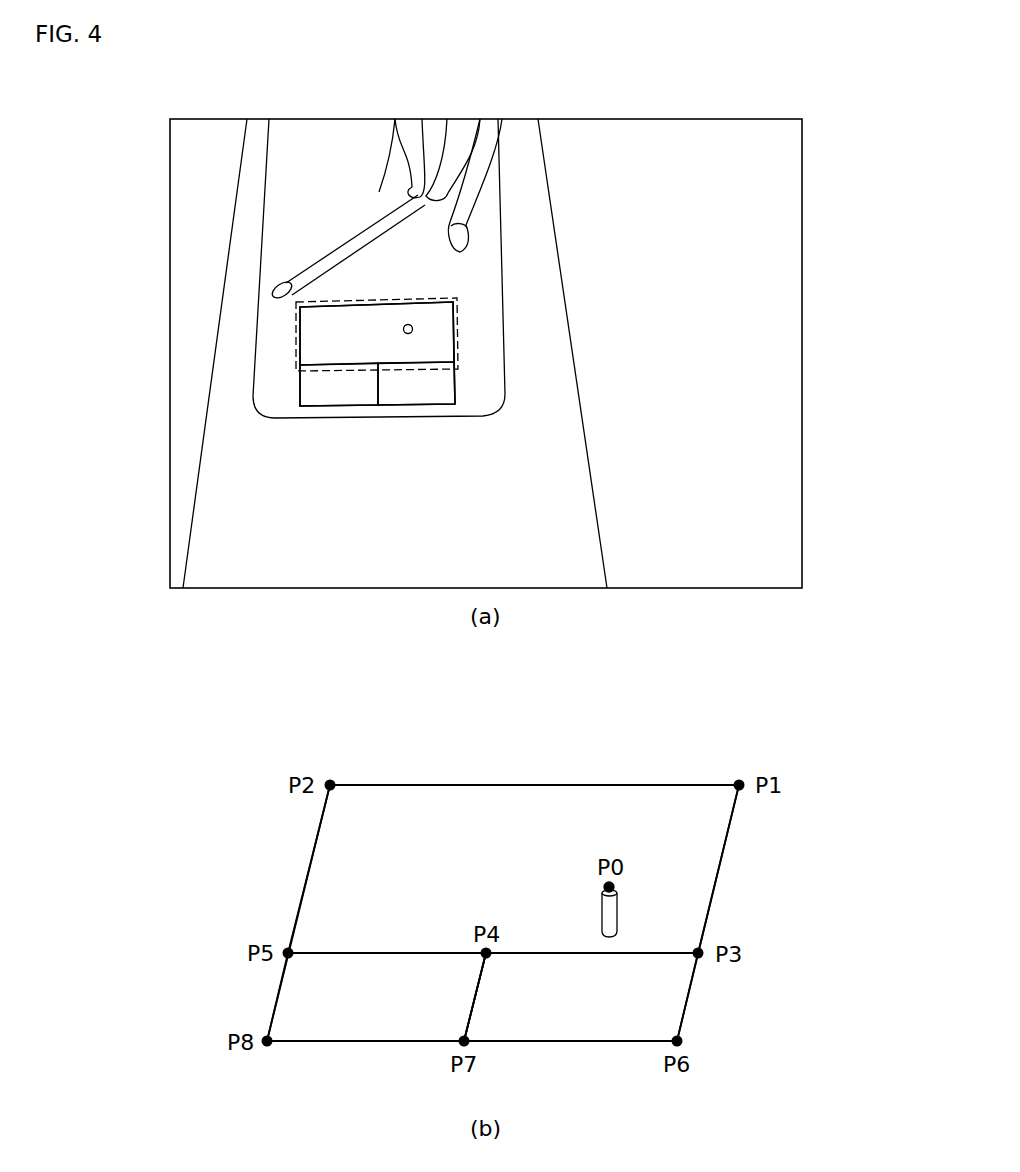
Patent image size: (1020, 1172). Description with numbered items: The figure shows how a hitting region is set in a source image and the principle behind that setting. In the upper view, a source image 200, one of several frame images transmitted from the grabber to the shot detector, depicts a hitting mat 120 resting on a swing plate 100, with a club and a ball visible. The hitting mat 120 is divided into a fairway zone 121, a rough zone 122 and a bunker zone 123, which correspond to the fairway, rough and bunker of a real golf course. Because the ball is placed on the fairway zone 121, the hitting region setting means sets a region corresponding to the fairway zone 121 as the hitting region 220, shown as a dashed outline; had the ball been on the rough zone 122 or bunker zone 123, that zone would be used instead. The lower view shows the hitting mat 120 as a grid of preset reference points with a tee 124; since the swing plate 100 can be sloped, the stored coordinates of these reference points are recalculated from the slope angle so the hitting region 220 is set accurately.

The swing plate 100 is at (499, 253).
The source image 200 is at (803, 262).
The hitting region 220 is at (459, 318).
The hitting mat 120 is at (457, 380).
The fairway zone 121 is at (312, 339).
The rough zone 122 is at (414, 397).
The bunker zone 123 is at (310, 389).
The tee 124 is at (601, 910).